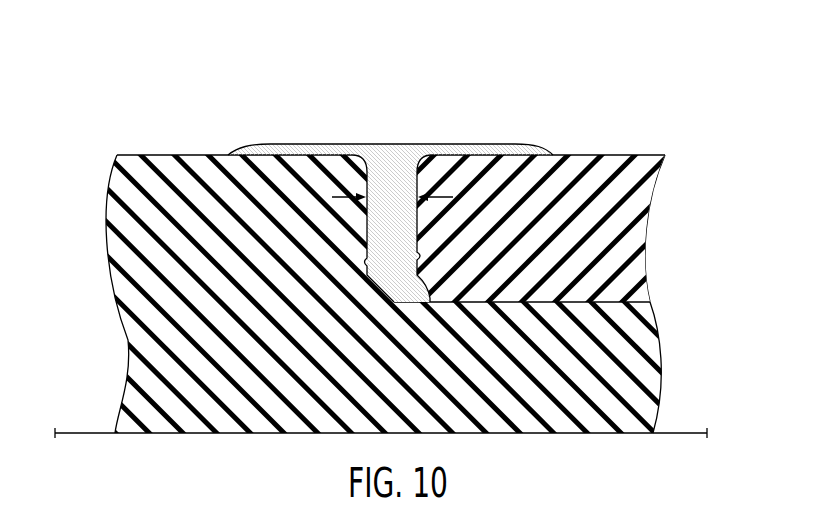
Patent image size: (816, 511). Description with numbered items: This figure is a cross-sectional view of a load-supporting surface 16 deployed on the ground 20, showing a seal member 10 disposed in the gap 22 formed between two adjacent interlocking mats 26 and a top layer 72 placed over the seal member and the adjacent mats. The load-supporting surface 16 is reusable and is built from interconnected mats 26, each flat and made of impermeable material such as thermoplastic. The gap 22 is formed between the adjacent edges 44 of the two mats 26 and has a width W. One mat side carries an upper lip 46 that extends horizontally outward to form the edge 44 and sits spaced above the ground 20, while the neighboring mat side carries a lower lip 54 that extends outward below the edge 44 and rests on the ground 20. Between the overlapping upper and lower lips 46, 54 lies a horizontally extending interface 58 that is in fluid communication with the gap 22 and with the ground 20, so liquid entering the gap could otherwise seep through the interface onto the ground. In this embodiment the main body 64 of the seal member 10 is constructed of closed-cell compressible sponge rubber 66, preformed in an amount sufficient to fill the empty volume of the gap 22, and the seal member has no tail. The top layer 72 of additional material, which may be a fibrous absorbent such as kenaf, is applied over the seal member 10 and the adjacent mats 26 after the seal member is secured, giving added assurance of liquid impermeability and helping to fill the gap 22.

The seal member 10 is at (380, 146).
The load-supporting surface 16 is at (408, 236).
The ground 20 is at (408, 290).
The gap 22 is at (392, 181).
The mat 26 is at (188, 153).
The edge 44 is at (285, 158).
The upper lip 46 is at (542, 230).
The lower lip 54 is at (638, 348).
The interface 58 is at (466, 294).
The main body 64 is at (415, 158).
The closed-cell compressible sponge rubber 66 is at (366, 156).
The top layer 72 is at (397, 148).
The width W is at (434, 196).